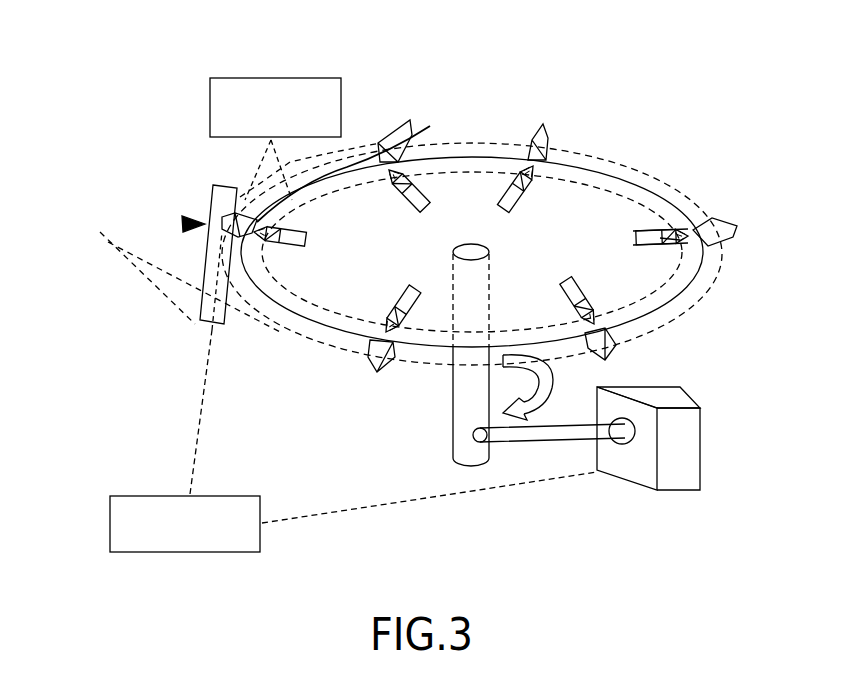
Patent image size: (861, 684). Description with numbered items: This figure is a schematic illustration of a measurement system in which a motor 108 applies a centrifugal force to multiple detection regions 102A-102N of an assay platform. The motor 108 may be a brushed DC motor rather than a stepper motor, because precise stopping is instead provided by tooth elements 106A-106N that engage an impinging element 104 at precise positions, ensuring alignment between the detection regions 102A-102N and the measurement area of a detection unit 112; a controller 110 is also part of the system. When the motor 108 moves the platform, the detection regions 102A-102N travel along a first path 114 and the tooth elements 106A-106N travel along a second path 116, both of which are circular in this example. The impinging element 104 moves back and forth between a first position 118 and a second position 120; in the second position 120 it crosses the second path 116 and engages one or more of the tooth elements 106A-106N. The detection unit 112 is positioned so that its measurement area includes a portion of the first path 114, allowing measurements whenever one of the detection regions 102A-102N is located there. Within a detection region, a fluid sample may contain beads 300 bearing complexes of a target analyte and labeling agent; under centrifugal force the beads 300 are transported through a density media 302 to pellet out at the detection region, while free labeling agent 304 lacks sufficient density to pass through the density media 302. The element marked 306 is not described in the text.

The detection regions 102A-102N is at (676, 223).
The impinging element 104 is at (132, 250).
The tooth elements 106A-106N is at (545, 222).
The motor 108 is at (576, 385).
The controller 110 is at (353, 441).
The detection unit 112 is at (275, 111).
The first path 114 is at (478, 238).
The second path 116 is at (472, 230).
The first position 118 is at (240, 238).
The second position 120 is at (213, 180).
The beads 300 is at (715, 245).
The density media 302 is at (727, 265).
The free labeling agent 304 is at (703, 284).
The beam path 306 is at (267, 190).